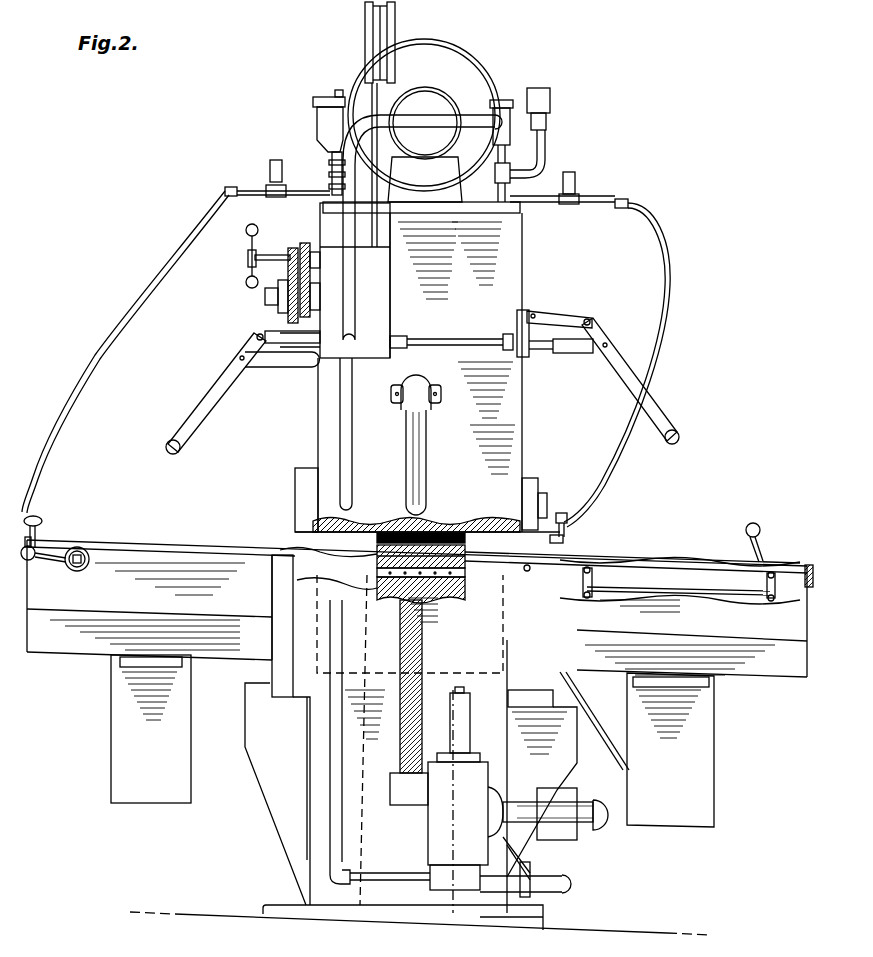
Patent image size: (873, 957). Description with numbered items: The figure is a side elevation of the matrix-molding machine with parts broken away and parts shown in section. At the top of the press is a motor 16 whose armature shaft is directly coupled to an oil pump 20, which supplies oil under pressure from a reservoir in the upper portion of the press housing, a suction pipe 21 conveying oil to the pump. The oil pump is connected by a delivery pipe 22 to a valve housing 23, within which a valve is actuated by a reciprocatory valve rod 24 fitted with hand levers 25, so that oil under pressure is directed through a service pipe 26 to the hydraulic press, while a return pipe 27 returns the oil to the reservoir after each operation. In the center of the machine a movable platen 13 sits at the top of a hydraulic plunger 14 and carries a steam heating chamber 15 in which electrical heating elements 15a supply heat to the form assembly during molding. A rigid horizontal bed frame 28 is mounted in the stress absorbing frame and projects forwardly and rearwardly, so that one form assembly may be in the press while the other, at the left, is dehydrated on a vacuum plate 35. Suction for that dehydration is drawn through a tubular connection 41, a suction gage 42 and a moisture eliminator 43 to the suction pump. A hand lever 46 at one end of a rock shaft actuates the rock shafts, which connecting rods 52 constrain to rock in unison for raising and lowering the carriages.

The movable platen 13 is at (459, 514).
The hydraulic plunger 14 is at (465, 586).
The steam heating chamber 15 is at (465, 566).
The electrical heating elements 15a is at (378, 566).
The motor 16 is at (442, 56).
The oil pump 20 is at (432, 102).
The suction pipe 21 is at (326, 138).
The delivery pipe 22 is at (473, 118).
The valve housing 23 is at (382, 316).
The reciprocatory valve rod 24 is at (458, 342).
The hand levers 25 is at (212, 409).
The service pipe 26 is at (352, 440).
The return pipe 27 is at (420, 483).
The bed frame 28 is at (68, 638).
The vacuum plate 35 is at (545, 553).
The tubular connection 41 is at (128, 298).
The suction gage 42 is at (270, 172).
The moisture eliminator 43 is at (322, 117).
The hand lever 46 is at (60, 548).
The connecting rods 52 is at (661, 598).